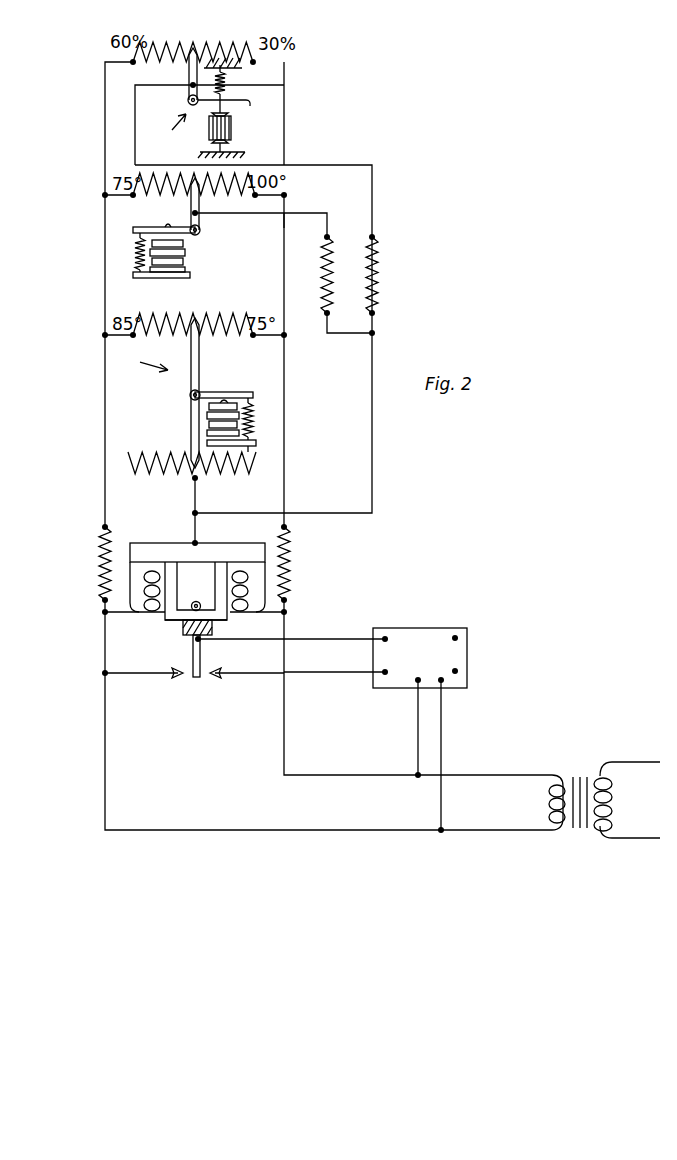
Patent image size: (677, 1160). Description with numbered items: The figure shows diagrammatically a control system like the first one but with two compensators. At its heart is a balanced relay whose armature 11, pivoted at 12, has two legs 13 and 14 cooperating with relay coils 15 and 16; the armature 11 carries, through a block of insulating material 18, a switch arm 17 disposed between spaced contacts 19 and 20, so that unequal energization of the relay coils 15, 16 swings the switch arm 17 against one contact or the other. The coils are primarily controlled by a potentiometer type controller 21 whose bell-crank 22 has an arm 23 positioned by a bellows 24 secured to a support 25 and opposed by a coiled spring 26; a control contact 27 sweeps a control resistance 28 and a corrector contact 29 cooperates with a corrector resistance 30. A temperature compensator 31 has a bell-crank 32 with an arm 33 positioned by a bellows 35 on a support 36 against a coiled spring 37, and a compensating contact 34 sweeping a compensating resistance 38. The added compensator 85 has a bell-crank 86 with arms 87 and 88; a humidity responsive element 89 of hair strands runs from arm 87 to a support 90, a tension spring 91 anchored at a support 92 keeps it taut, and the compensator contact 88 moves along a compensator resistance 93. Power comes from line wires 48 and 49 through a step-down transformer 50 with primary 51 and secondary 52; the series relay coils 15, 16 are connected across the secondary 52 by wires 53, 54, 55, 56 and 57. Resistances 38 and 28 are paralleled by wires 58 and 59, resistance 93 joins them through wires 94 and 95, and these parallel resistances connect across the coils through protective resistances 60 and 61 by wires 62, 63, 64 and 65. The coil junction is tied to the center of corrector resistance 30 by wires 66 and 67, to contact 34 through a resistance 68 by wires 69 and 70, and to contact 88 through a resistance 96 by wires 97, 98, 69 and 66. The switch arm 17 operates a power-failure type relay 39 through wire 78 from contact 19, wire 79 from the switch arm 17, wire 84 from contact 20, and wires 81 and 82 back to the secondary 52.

The armature 11 is at (165, 620).
The pivot 12 is at (193, 596).
The leg 13 is at (197, 553).
The leg 14 is at (220, 573).
The relay coil 15 is at (144, 587).
The relay coil 16 is at (251, 587).
The switch arm 17 is at (200, 656).
The block of insulating material 18 is at (183, 630).
The contact 19 is at (176, 676).
The contact 20 is at (222, 676).
The controller 21 is at (141, 361).
The bell-crank 22 is at (189, 395).
The arm 23 is at (220, 392).
The bellows 24 is at (209, 417).
The support 25 is at (254, 446).
The coiled spring 26 is at (250, 404).
The control contact 27 is at (191, 353).
The control resistance 28 is at (196, 316).
The corrector contact 29 is at (207, 442).
The corrector resistance 30 is at (172, 476).
The compensator 31 is at (250, 237).
The bell-crank 32 is at (200, 231).
The arm 33 is at (147, 227).
The compensating contact 34 is at (199, 209).
The bellows 35 is at (185, 250).
The support 36 is at (190, 275).
The coiled spring 37 is at (138, 262).
The compensating resistance 38 is at (194, 195).
The power-failure type of relay 39 is at (430, 667).
The line wire 48 is at (630, 762).
The line wire 49 is at (630, 838).
The step-down transformer 50 is at (576, 758).
The high voltage primary 51 is at (612, 799).
The low voltage secondary 52 is at (549, 805).
The wire 53 is at (506, 775).
The wire 54 is at (284, 762).
The wire 55 is at (105, 642).
The wire 56 is at (105, 826).
The wire 57 is at (490, 830).
The wire 58 is at (284, 278).
The wire 59 is at (105, 256).
The protective resistance 60 is at (290, 560).
The protective resistance 61 is at (103, 558).
The wire 62 is at (284, 416).
The wire 63 is at (288, 606).
The wire 64 is at (105, 424).
The wire 65 is at (102, 608).
The wire 66 is at (195, 527).
The wire 67 is at (198, 494).
The resistance 68 is at (323, 272).
The wire 69 is at (372, 440).
The wire 70 is at (327, 213).
The wire 78 is at (135, 676).
The wire 79 is at (327, 639).
The wire 81 is at (418, 730).
The wire 82 is at (441, 748).
The wire 84 is at (327, 674).
The compensator 85 is at (209, 113).
The bell-crank 86 is at (188, 101).
The arm 87 is at (249, 103).
The compensator contact 88 is at (189, 76).
The humidity responsive element 89 is at (231, 128).
The support 90 is at (238, 154).
The tension spring 91 is at (226, 84).
The support 92 is at (240, 68).
The compensator resistance 93 is at (196, 44).
The wire 94 is at (284, 100).
The wire 95 is at (105, 112).
The resistance 96 is at (378, 258).
The wire 97 is at (167, 123).
The wire 98 is at (378, 323).